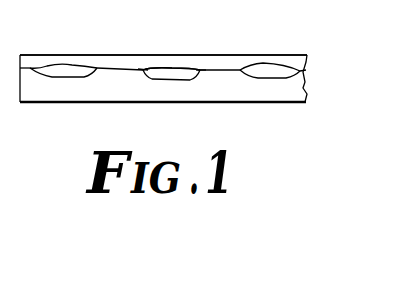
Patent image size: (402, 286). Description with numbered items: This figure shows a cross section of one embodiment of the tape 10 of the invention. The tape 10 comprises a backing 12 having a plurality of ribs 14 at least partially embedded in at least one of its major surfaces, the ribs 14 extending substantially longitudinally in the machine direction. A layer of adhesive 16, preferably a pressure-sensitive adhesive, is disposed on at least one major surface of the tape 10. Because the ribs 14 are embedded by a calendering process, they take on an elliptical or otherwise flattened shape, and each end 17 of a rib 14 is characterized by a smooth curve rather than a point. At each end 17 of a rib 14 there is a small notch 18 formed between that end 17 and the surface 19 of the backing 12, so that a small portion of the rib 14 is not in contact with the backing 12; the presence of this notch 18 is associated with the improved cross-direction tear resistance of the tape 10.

The tape 10 is at (308, 62).
The backing 12 is at (305, 104).
The ribs 14 is at (263, 79).
The layer of adhesive 16 is at (293, 62).
The end of rib 17 is at (185, 72).
The notch 18 is at (144, 72).
The surface of backing 19 is at (223, 68).